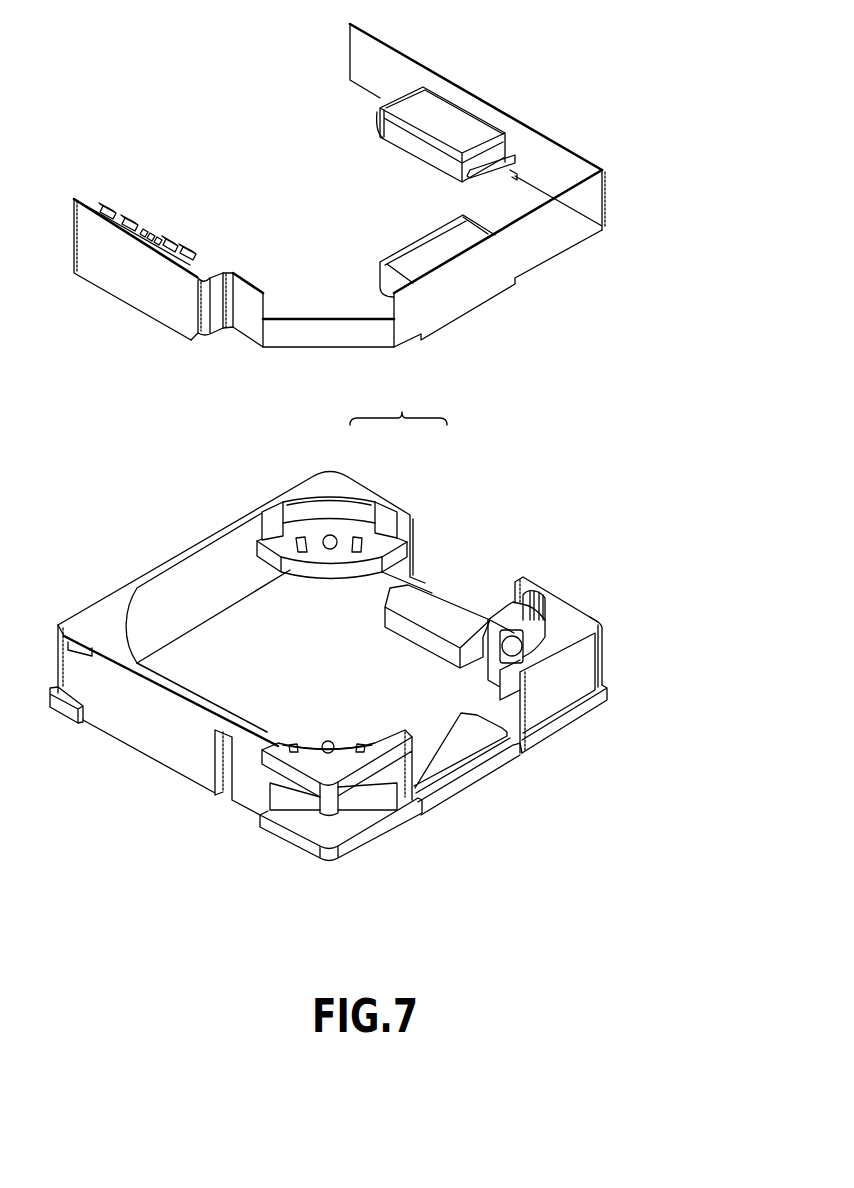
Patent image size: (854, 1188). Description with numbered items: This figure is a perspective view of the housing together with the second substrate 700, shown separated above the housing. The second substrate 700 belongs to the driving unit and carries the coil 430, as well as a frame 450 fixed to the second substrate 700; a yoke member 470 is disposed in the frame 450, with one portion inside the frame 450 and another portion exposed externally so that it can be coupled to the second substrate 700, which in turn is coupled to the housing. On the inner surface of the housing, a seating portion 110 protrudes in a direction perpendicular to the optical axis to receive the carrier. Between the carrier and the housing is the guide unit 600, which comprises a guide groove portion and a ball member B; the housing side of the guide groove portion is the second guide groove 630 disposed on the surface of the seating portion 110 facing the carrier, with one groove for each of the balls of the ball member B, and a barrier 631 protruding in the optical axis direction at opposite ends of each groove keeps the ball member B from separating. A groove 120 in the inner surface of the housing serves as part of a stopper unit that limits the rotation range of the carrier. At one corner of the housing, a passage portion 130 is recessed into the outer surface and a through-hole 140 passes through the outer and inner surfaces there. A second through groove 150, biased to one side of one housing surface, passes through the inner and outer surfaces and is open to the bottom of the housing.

The second substrate 700 is at (553, 230).
The coil 430 is at (430, 113).
The frame 450 is at (483, 153).
The yoke member 470 is at (509, 160).
The seating portion 110 is at (277, 540).
The groove 120 is at (533, 600).
The passage portion 130 is at (335, 827).
The through-hole 140 is at (285, 798).
The second through groove 150 is at (222, 755).
The guide unit 600 is at (398, 406).
The second guide groove 630 is at (347, 537).
The barrier 631 is at (508, 610).
The ball member B is at (330, 535).